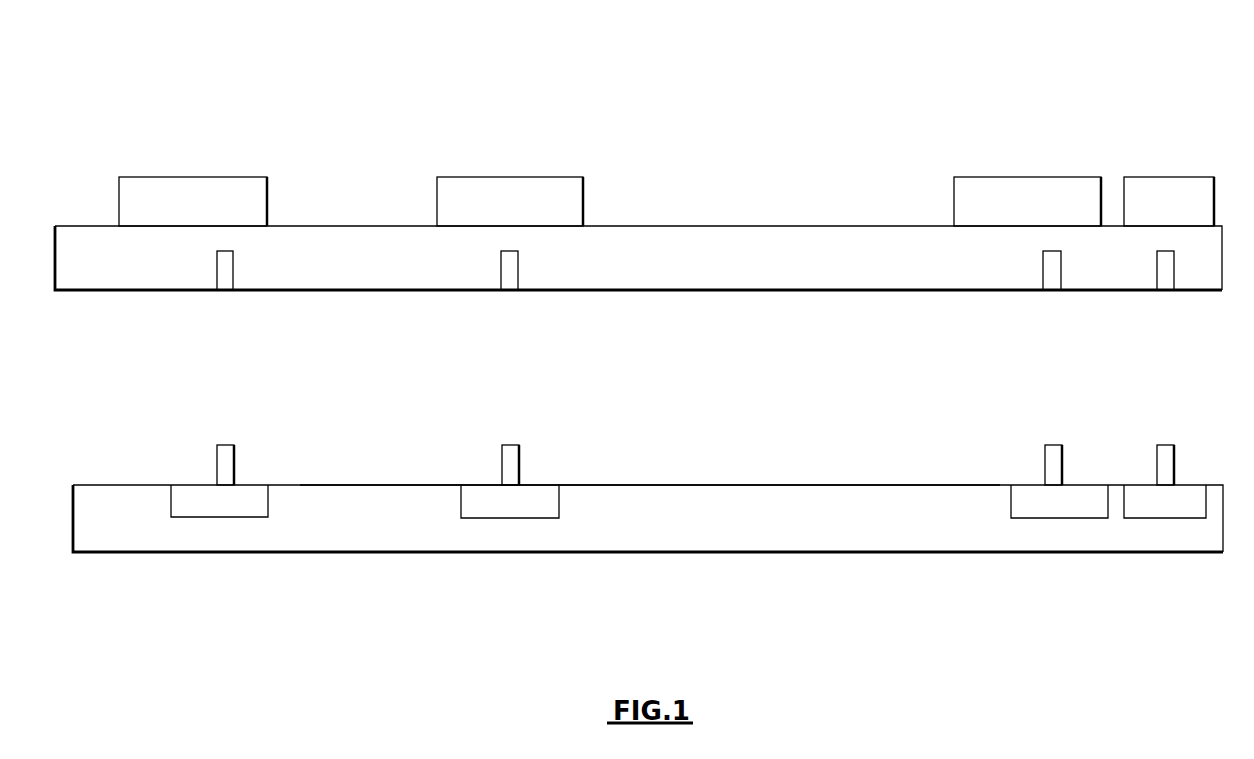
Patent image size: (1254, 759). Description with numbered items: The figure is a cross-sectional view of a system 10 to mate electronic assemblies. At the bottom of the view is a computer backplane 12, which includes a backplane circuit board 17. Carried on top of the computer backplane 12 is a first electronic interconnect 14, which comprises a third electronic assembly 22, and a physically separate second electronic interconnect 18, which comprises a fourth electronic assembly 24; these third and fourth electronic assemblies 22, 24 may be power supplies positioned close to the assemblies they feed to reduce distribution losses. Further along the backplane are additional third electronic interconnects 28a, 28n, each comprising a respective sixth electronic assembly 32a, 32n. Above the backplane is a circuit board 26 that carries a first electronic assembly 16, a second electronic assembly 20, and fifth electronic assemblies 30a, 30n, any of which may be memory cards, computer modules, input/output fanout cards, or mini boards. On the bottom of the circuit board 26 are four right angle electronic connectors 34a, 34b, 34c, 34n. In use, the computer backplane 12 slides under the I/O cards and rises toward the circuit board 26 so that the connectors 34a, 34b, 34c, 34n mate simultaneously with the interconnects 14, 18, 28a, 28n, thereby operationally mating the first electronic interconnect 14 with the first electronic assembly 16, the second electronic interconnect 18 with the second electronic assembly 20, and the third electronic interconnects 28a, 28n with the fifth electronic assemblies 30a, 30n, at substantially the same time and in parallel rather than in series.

The system to mate electronic assemblies 10 is at (131, 81).
The computer backplane 12 is at (692, 560).
The first electronic interconnect 14 is at (232, 445).
The first electronic assembly 16 is at (206, 177).
The backplane circuit board 17 is at (760, 485).
The second electronic interconnect 18 is at (517, 445).
The second electronic assembly 20 is at (507, 177).
The third electronic assembly 22 is at (195, 485).
The fourth electronic assembly 24 is at (487, 485).
The circuit board 26 is at (779, 226).
The third electronic interconnect 28a is at (1050, 445).
The third electronic interconnect 28n is at (1157, 445).
The fifth electronic assembly 30a is at (1028, 177).
The fifth electronic assembly 30n is at (1157, 177).
The sixth electronic assembly 32a is at (1087, 485).
The sixth electronic assembly 32n is at (1192, 485).
The right angle electronic connector 34a is at (226, 290).
The right angle electronic connector 34b is at (510, 290).
The right angle electronic connector 34c is at (1052, 290).
The right angle electronic connector 34n is at (1166, 290).